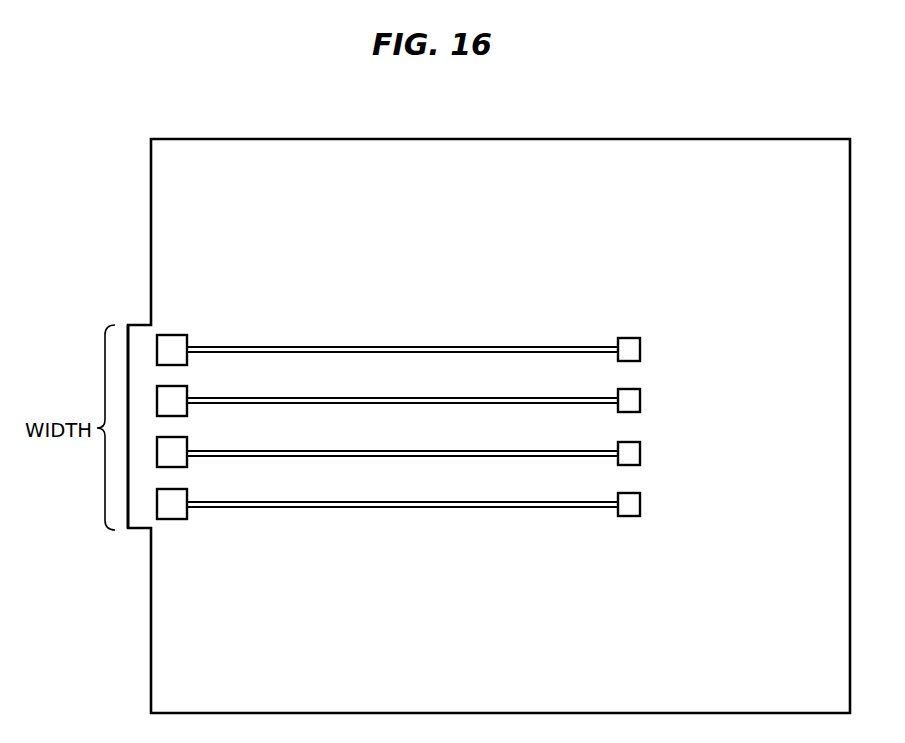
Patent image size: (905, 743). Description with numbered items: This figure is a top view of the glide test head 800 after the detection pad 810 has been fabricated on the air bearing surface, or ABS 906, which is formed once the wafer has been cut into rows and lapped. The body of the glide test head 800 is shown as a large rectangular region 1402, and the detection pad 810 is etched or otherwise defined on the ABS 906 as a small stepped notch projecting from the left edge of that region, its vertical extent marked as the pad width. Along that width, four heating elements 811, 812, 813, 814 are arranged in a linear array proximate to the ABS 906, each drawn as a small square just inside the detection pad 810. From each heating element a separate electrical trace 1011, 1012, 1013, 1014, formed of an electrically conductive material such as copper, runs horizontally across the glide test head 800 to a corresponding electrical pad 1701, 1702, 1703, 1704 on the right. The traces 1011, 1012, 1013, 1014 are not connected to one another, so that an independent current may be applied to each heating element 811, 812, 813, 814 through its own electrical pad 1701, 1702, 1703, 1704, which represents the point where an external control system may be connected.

The glide test head 800 is at (631, 82).
The substrate 1402 is at (825, 186).
The ABS 906 is at (140, 576).
The detection pad 810 is at (136, 330).
The heating element 811 is at (176, 520).
The heating element 812 is at (180, 459).
The heating element 813 is at (182, 392).
The heating element 814 is at (177, 342).
The electrical trace 1011 is at (487, 502).
The electrical trace 1012 is at (437, 451).
The electrical trace 1013 is at (460, 398).
The electrical trace 1014 is at (443, 347).
The electrical pad 1701 is at (636, 505).
The electrical pad 1702 is at (636, 453).
The electrical pad 1703 is at (636, 400).
The electrical pad 1704 is at (636, 349).